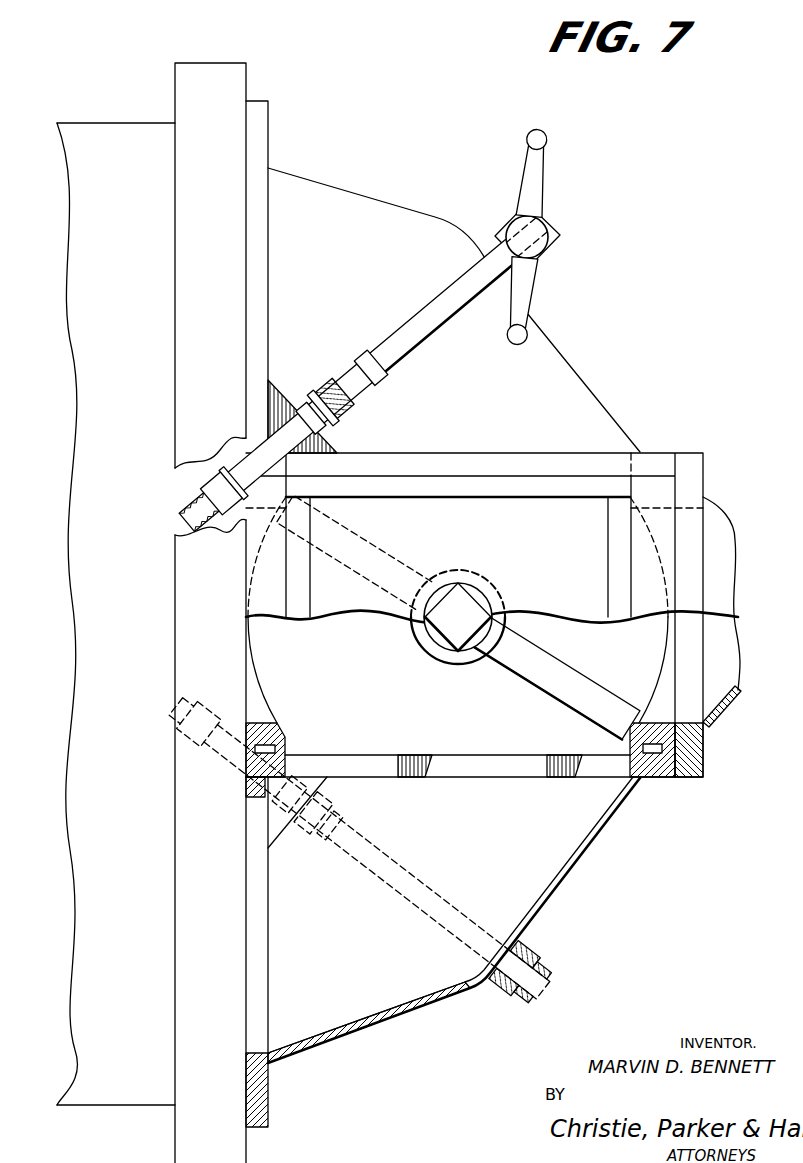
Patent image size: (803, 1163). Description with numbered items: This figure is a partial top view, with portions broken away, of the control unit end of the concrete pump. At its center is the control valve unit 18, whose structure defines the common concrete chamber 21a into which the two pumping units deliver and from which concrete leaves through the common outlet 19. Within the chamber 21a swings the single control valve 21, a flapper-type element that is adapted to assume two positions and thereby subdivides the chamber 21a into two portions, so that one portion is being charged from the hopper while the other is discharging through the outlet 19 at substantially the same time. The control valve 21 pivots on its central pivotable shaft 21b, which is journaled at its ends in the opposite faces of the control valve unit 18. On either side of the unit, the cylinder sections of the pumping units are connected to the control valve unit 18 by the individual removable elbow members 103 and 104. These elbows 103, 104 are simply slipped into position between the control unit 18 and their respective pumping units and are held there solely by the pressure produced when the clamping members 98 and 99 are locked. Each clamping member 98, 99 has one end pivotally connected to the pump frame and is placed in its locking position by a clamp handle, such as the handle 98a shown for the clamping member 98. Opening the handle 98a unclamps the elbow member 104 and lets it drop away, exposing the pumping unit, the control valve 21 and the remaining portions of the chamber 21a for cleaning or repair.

The control valve unit 18 is at (425, 534).
The common outlet 19 is at (720, 712).
The control valve 21 is at (585, 670).
The concrete chamber 21a is at (476, 838).
The central pivotable shaft 21b is at (478, 608).
The clamping member 98 is at (557, 245).
The clamp handle 98a is at (543, 168).
The clamping member 99 is at (523, 1013).
The elbow member 103 is at (550, 893).
The elbow member 104 is at (580, 398).